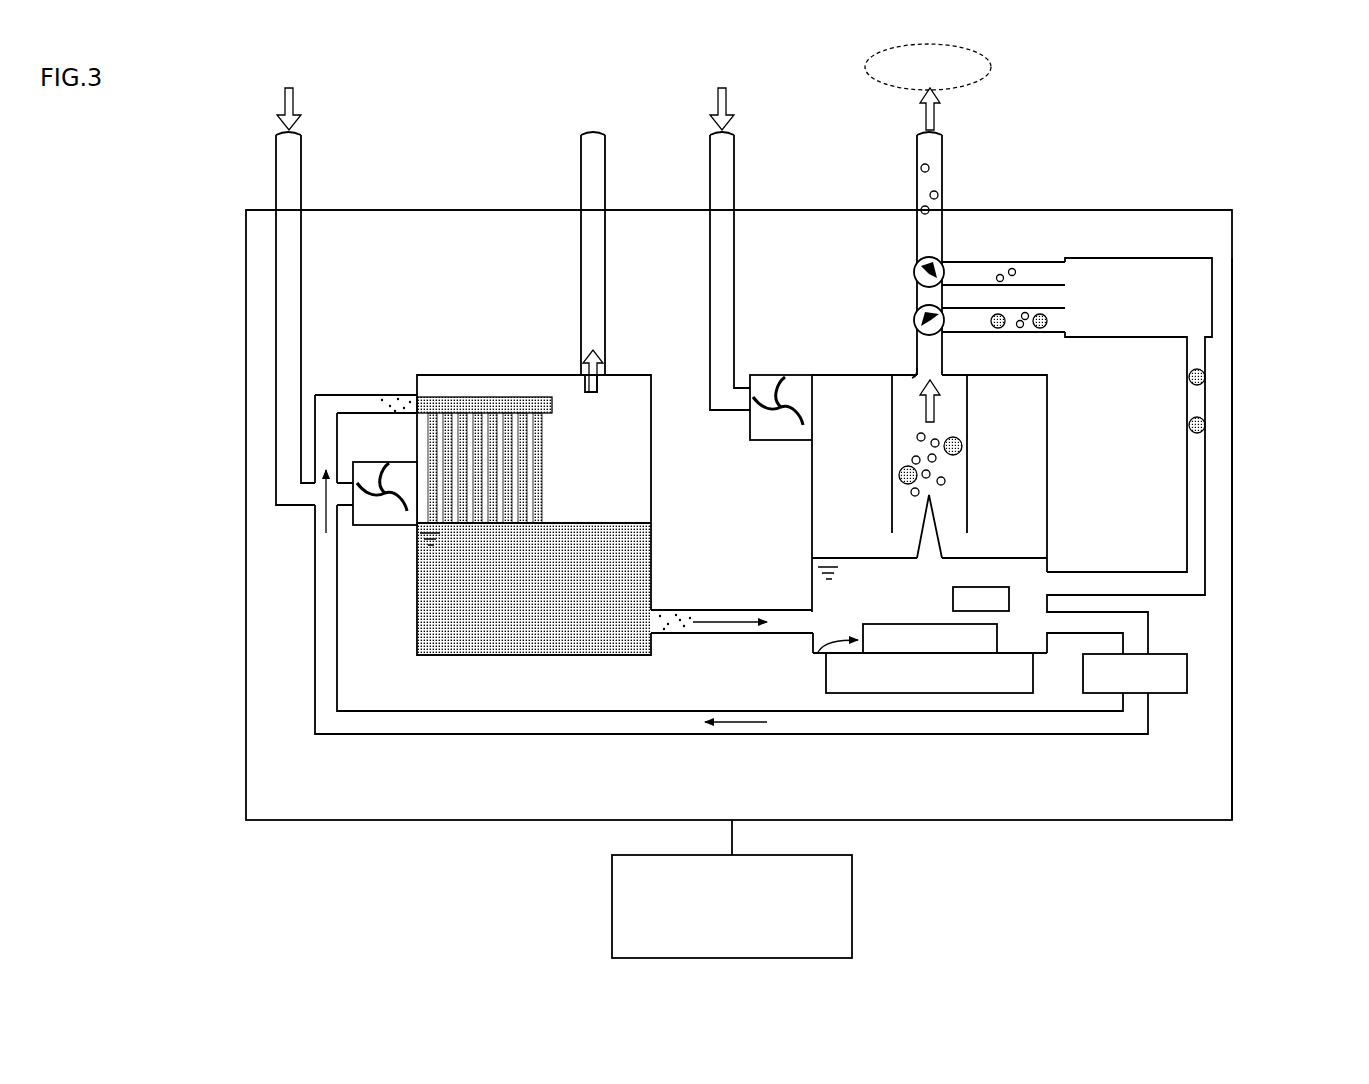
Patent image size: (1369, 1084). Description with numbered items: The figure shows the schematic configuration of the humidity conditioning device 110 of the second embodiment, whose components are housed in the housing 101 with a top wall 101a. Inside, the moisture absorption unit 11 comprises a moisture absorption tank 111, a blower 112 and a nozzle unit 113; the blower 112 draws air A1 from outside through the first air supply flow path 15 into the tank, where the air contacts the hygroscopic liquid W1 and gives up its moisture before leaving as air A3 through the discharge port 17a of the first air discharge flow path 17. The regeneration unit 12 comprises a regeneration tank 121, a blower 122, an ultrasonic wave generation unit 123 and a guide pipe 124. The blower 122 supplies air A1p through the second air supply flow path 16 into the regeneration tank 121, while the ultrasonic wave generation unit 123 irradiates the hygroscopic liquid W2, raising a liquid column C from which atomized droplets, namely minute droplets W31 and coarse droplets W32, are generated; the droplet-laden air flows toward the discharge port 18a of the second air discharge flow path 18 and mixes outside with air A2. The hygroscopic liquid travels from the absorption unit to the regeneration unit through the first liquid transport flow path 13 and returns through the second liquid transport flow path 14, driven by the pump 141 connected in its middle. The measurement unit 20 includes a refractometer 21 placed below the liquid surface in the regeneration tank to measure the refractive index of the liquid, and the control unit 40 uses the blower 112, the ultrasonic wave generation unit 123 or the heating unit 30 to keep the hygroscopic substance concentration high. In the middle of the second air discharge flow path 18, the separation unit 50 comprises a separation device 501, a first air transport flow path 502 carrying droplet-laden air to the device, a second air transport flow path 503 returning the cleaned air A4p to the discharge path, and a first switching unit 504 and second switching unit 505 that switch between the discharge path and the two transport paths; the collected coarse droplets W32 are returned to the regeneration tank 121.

The humidity conditioning device 110 is at (1185, 120).
The housing 101 is at (793, 210).
The top wall of housing 101a is at (413, 236).
The moisture absorption unit 11 is at (446, 328).
The moisture absorption tank 111 is at (417, 609).
The blower 112 is at (377, 524).
The nozzle unit 113 is at (487, 396).
The regeneration unit 12 is at (1063, 372).
The regeneration tank 121 is at (1047, 434).
The blower 122 is at (750, 434).
The guide pipe 124 is at (967, 398).
The first liquid transport flow path 13 is at (681, 627).
The second liquid transport flow path 14 is at (514, 736).
The pump 141 is at (1159, 696).
The first air supply flow path 15 is at (303, 295).
The second air supply flow path 16 is at (708, 192).
The first air discharge flow path 17 is at (607, 148).
The discharge port 17a is at (581, 370).
The second air discharge flow path 18 is at (945, 162).
The discharge port 18a is at (918, 368).
The measurement unit 20 is at (1017, 589).
The refractometer 21 is at (1002, 612).
The heating unit 30 is at (815, 652).
The control unit 40 is at (855, 905).
The separation unit 50 is at (1223, 258).
The separation device 501 is at (1213, 288).
The first air transport flow path 502 is at (998, 336).
The second air transport flow path 503 is at (1000, 258).
The first switching unit 504 is at (912, 324).
The second switching unit 505 is at (912, 272).
The ultrasonic wave generation unit 123 is at (926, 699).
The air A1 is at (296, 103).
The air A1p is at (730, 104).
The air A2 is at (990, 60).
The air A3 is at (602, 372).
The air A4p is at (938, 110).
The hygroscopic liquid W1 is at (421, 658).
The hygroscopic liquid W2 is at (820, 594).
The minute droplet W31 is at (944, 482).
The coarse droplet W32 is at (1205, 427).
The liquid column C is at (930, 540).